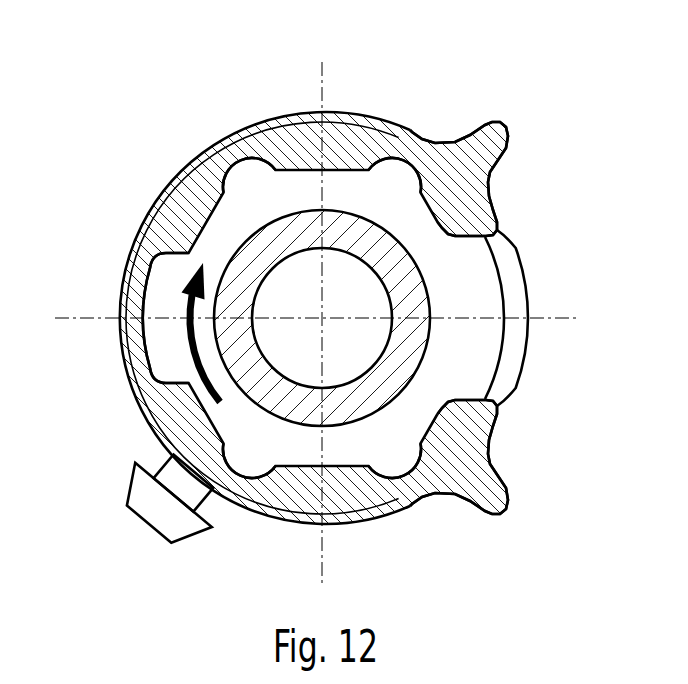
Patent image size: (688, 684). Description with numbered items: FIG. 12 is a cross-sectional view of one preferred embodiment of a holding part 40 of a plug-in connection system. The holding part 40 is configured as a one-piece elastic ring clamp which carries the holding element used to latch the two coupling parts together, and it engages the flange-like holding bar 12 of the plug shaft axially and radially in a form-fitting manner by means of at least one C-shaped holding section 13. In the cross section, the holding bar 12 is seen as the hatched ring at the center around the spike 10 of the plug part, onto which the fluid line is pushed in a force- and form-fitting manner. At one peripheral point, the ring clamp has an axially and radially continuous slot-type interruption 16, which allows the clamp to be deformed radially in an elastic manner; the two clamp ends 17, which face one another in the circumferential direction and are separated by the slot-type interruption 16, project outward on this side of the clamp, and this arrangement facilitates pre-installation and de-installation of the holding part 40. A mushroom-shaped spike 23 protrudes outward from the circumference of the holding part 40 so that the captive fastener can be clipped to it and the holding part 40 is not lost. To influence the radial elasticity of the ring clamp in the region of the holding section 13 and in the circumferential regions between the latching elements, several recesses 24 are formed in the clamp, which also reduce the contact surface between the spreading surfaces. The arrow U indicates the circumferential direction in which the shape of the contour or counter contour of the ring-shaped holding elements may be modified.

The spike 10 is at (310, 230).
The holding bar 12 is at (465, 343).
The C-shaped holding section 13 is at (162, 218).
The slot-type interruption 16 is at (485, 294).
The clamp ends 17 is at (510, 188).
The mushroom-shaped spike 23 is at (178, 523).
The recess 24 is at (248, 183).
The holding part 40 is at (446, 105).
The circumferential direction arrow U is at (188, 360).